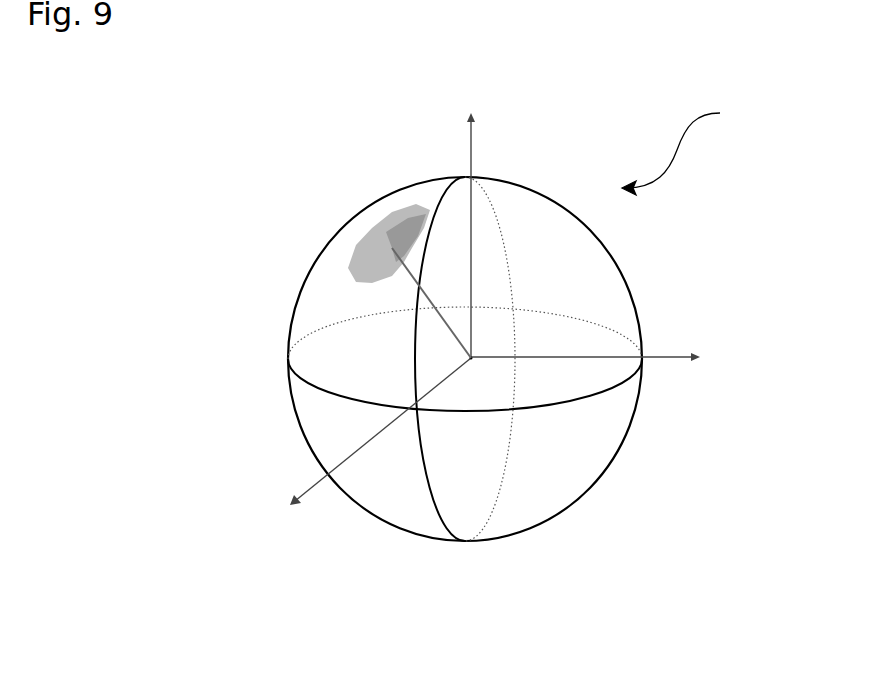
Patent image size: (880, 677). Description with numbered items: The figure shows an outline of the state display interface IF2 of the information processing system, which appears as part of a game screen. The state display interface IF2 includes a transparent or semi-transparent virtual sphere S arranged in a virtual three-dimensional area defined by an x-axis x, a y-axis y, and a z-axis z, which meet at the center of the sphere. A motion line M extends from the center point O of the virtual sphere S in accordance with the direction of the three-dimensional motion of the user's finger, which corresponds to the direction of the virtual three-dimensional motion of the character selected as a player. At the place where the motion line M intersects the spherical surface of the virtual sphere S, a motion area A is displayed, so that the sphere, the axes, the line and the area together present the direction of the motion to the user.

The state display interface IF2 is at (699, 147).
The virtual sphere S is at (628, 273).
The motion area A is at (372, 262).
The motion line M is at (437, 318).
The center point O is at (473, 362).
The x-axis x is at (597, 354).
The y-axis y is at (471, 216).
The z-axis z is at (370, 447).